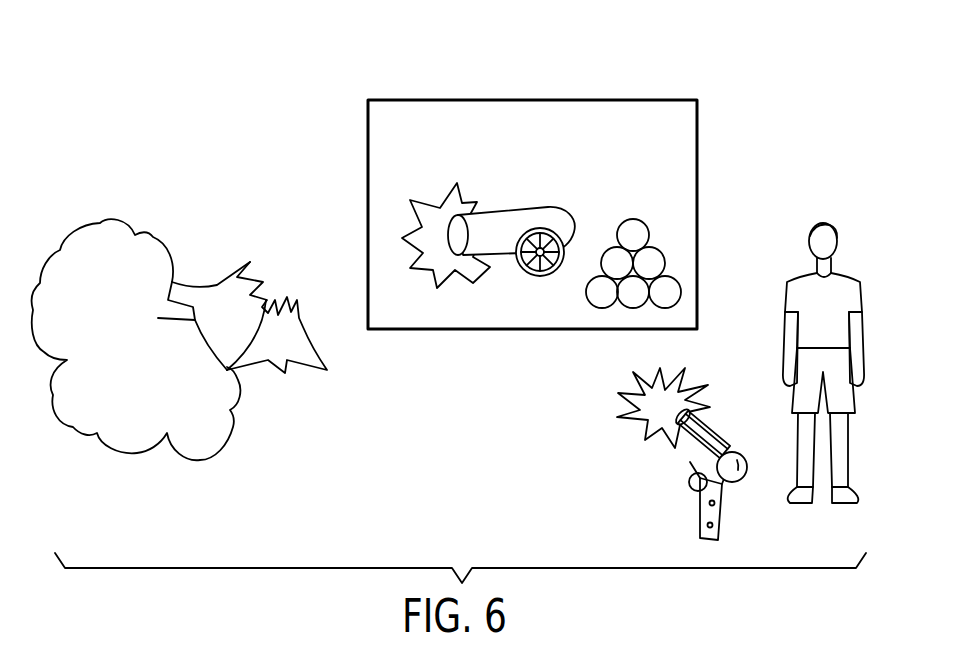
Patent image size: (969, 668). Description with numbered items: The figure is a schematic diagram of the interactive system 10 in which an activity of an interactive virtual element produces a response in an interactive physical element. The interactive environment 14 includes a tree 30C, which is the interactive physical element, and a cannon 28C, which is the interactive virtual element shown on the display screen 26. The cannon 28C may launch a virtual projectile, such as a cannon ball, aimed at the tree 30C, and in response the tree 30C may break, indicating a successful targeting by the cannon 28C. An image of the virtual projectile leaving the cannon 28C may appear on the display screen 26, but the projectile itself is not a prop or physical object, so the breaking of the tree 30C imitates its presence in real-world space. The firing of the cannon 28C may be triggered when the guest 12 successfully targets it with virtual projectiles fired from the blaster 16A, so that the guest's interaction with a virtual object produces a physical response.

The interactive system 10 is at (305, 76).
The guest 12 is at (836, 236).
The interactive environment 14 is at (234, 135).
The blaster 16A is at (748, 461).
The display screen 26 is at (533, 100).
The cannon 28C is at (576, 224).
The tree 30C is at (220, 288).